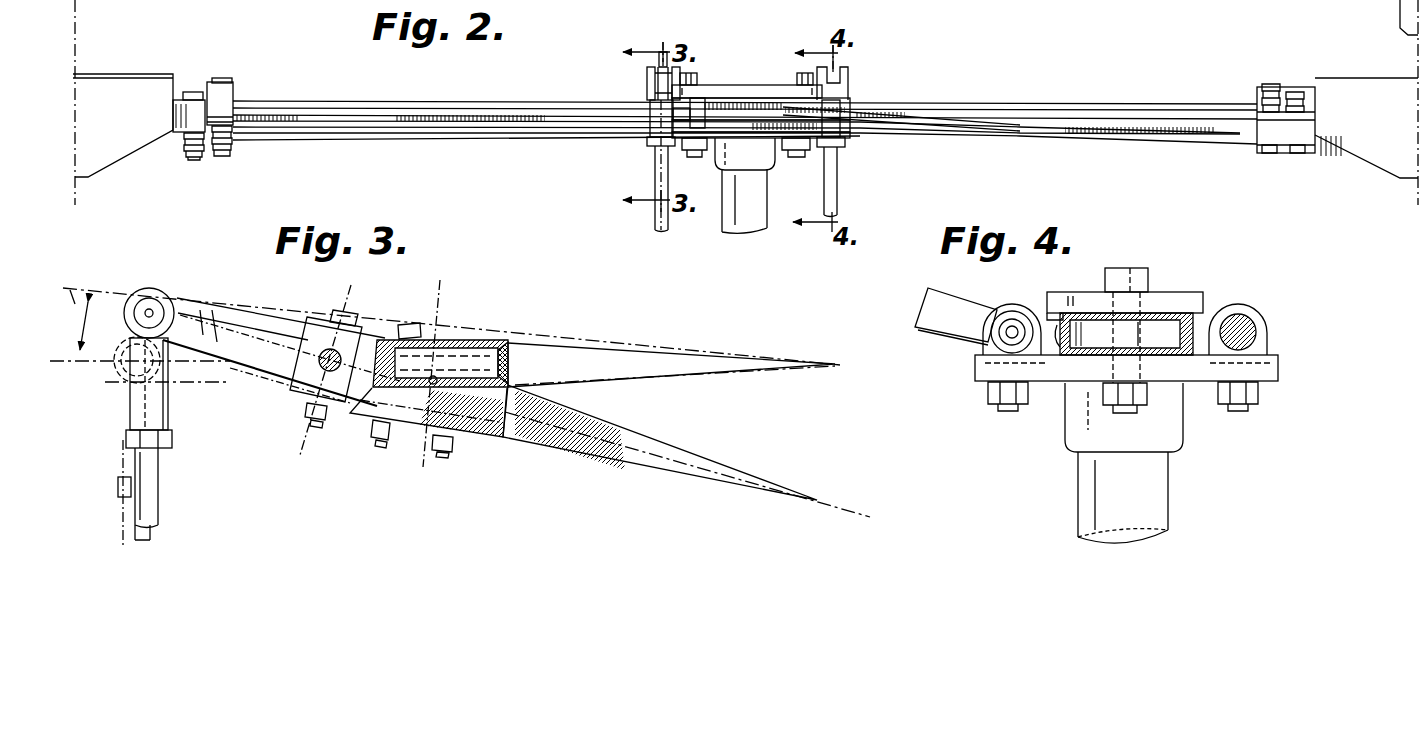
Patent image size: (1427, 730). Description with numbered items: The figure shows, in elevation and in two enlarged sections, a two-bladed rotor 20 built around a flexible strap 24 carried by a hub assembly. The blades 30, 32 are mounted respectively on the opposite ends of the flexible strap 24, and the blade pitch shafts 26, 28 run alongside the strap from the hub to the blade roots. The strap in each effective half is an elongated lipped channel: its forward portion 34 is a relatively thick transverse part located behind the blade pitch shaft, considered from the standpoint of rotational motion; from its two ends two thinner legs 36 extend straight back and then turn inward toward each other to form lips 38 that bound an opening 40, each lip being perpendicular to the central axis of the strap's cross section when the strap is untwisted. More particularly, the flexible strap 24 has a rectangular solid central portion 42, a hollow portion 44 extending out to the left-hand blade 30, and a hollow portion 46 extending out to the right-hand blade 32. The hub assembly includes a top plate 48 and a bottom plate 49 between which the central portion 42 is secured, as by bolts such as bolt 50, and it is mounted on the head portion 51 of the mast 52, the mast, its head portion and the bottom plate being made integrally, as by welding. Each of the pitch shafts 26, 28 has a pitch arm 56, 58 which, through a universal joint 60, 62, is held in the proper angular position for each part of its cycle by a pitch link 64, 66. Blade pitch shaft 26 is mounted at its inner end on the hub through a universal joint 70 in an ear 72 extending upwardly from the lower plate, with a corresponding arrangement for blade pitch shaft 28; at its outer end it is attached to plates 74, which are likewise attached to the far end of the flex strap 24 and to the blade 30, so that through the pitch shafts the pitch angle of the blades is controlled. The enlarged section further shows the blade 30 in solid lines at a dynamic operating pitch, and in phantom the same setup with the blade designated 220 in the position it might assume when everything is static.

In FIG. 2, the two-bladed rotor 20 is at (436, 128).
In FIG. 3, the two-bladed rotor 20 is at (456, 332).
In FIG. 4, the two-bladed rotor 20 is at (1092, 307).
In FIG. 2, the flexible strap 24 is at (503, 132).
In FIG. 3, the flexible strap 24 is at (492, 342).
In FIG. 2, the blade pitch shaft 26 is at (345, 106).
In FIG. 3, the blade pitch shaft 26 is at (308, 407).
In FIG. 4, the blade pitch shaft 26 is at (1012, 332).
In FIG. 4, the blade pitch shaft 28 is at (1246, 332).
In FIG. 2, the blade 30 is at (176, 84).
In FIG. 3, the blade 30 is at (605, 350).
In FIG. 2, the blade 32 is at (1336, 78).
In FIG. 2, the forward portion 34 is at (347, 120).
In FIG. 3, the forward portion 34 is at (360, 407).
In FIG. 2, the legs 36 is at (386, 136).
In FIG. 3, the legs 36 is at (410, 340).
In FIG. 4, the legs 36 is at (1161, 312).
In FIG. 3, the lips 38 is at (503, 360).
In FIG. 4, the lips 38 is at (1062, 325).
In FIG. 2, the opening 40 is at (950, 120).
In FIG. 3, the opening 40 is at (508, 358).
In FIG. 4, the opening 40 is at (1094, 333).
In FIG. 2, the central portion 42 is at (743, 113).
In FIG. 2, the portion 44 is at (455, 132).
In FIG. 3, the portion 44 is at (431, 392).
In FIG. 2, the portion 46 is at (1062, 110).
In FIG. 4, the portion 46 is at (1113, 316).
In FIG. 2, the top plate 48 is at (777, 86).
In FIG. 4, the top plate 48 is at (1184, 292).
In FIG. 2, the bottom plate 49 is at (723, 165).
In FIG. 4, the bottom plate 49 is at (1168, 376).
In FIG. 2, the bolt 50 is at (694, 76).
In FIG. 4, the bolt 50 is at (1132, 268).
In FIG. 2, the head portion 51 is at (725, 165).
In FIG. 4, the head portion 51 is at (1077, 433).
In FIG. 2, the mast 52 is at (740, 225).
In FIG. 4, the mast 52 is at (1080, 506).
In FIG. 2, the pitch arm 56 is at (647, 84).
In FIG. 3, the pitch arm 56 is at (236, 322).
In FIG. 4, the pitch arm 56 is at (983, 313).
In FIG. 2, the pitch arm 58 is at (850, 94).
In FIG. 4, the pitch arm 58 is at (1126, 383).
In FIG. 2, the universal joint 60 is at (658, 1).
In FIG. 3, the universal joint 60 is at (150, 290).
In FIG. 2, the universal joint 62 is at (838, 70).
In FIG. 2, the pitch link 64 is at (650, 168).
In FIG. 3, the pitch link 64 is at (169, 423).
In FIG. 2, the pitch link 66 is at (840, 174).
In FIG. 4, the universal joint 70 is at (1007, 334).
In FIG. 2, the ear 72 is at (702, 99).
In FIG. 4, the ear 72 is at (997, 334).
In FIG. 2, the plates 74 is at (231, 85).
In FIG. 3, the plates 74 is at (362, 340).
In FIG. 3, the blade in static position 220 is at (660, 352).